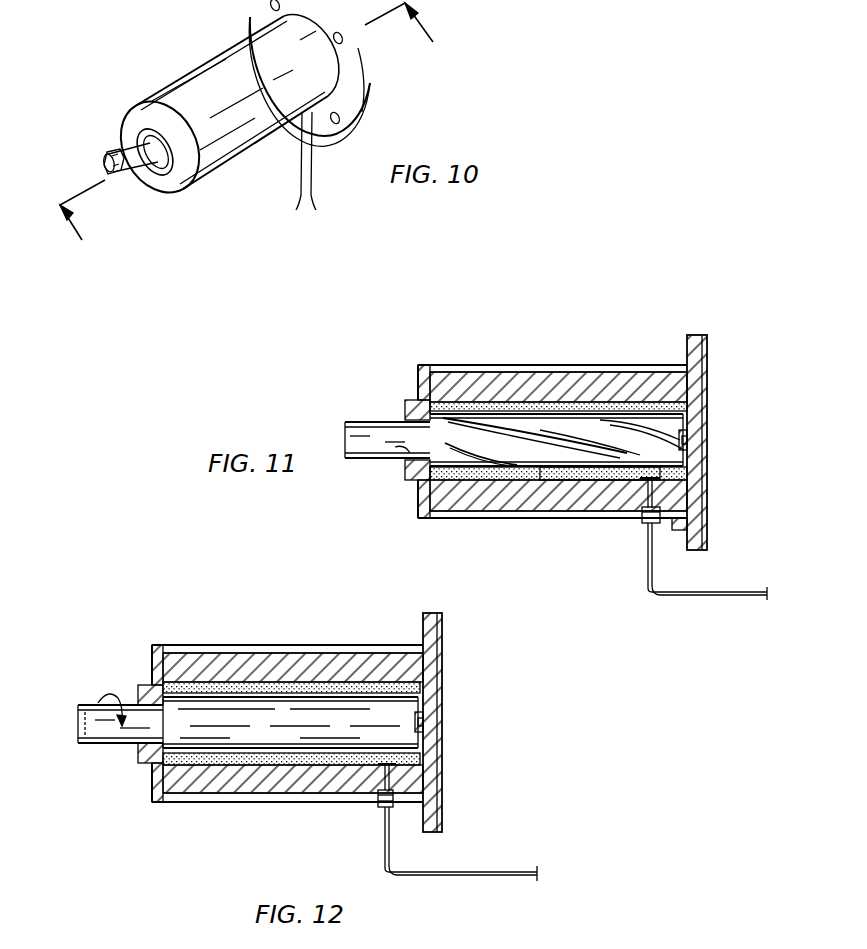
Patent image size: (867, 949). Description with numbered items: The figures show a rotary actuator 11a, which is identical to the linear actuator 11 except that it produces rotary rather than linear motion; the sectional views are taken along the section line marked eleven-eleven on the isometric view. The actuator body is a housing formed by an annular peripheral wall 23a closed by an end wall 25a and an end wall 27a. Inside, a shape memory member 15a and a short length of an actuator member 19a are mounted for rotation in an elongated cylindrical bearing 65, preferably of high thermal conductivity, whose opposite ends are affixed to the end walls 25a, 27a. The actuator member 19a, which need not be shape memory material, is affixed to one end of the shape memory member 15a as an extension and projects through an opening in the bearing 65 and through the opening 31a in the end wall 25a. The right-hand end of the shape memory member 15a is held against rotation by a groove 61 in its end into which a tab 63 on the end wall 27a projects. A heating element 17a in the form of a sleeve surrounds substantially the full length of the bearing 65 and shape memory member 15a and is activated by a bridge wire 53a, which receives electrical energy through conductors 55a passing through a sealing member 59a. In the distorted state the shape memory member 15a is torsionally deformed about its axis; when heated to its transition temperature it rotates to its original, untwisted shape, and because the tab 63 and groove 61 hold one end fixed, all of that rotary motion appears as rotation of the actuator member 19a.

In FIG. 10, the actuator 11 is at (234, 121).
In FIG. 10, the rotary actuator 11a is at (206, 64).
In FIG. 11, the rotary actuator 11a is at (574, 360).
In FIG. 10, the actuator member 19a is at (108, 150).
In FIG. 11, the actuator member 19a is at (382, 420).
In FIG. 12, the actuator member 19a is at (105, 735).
In FIG. 11, the peripheral wall 23a is at (612, 364).
In FIG. 11, the end wall 25a is at (424, 368).
In FIG. 11, the end wall 27a is at (708, 378).
In FIG. 12, the end wall 27a is at (436, 669).
In FIG. 11, the cylindrical bearing 65 is at (494, 404).
In FIG. 12, the cylindrical bearing 65 is at (203, 697).
In FIG. 11, the shape memory member 15a is at (503, 455).
In FIG. 12, the shape memory member 15a is at (218, 742).
In FIG. 11, the heating element 17a is at (570, 481).
In FIG. 11, the opening 31a is at (398, 448).
In FIG. 11, the tab 63 is at (690, 440).
In FIG. 12, the tab 63 is at (425, 720).
In FIG. 11, the groove 61 is at (704, 444).
In FIG. 12, the groove 61 is at (430, 729).
In FIG. 11, the bridge wire 53a is at (652, 488).
In FIG. 12, the bridge wire 53a is at (392, 766).
In FIG. 11, the sealing member 59a is at (641, 527).
In FIG. 11, the conductors 55a is at (702, 597).